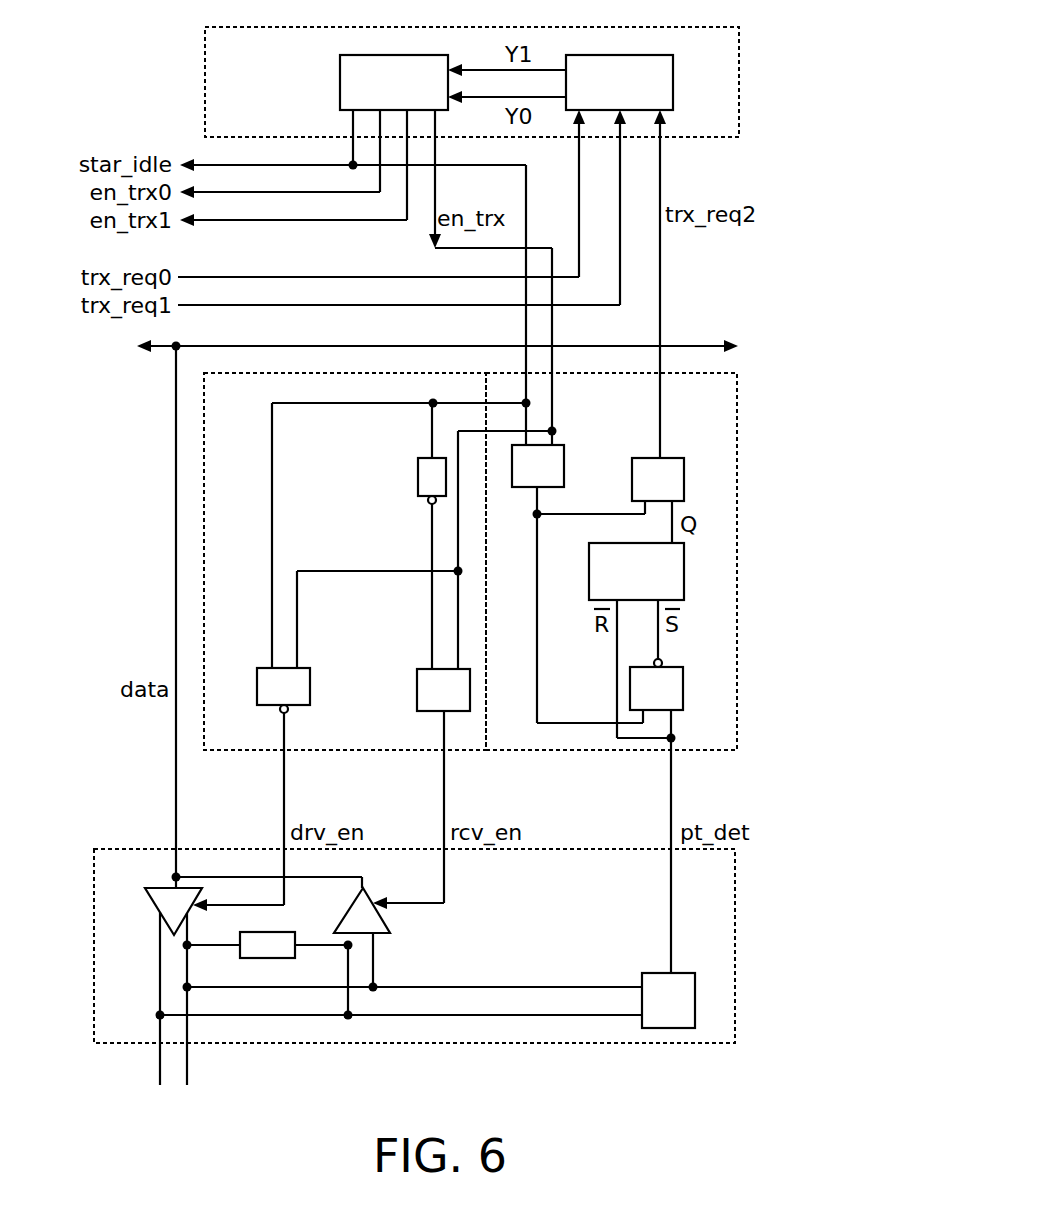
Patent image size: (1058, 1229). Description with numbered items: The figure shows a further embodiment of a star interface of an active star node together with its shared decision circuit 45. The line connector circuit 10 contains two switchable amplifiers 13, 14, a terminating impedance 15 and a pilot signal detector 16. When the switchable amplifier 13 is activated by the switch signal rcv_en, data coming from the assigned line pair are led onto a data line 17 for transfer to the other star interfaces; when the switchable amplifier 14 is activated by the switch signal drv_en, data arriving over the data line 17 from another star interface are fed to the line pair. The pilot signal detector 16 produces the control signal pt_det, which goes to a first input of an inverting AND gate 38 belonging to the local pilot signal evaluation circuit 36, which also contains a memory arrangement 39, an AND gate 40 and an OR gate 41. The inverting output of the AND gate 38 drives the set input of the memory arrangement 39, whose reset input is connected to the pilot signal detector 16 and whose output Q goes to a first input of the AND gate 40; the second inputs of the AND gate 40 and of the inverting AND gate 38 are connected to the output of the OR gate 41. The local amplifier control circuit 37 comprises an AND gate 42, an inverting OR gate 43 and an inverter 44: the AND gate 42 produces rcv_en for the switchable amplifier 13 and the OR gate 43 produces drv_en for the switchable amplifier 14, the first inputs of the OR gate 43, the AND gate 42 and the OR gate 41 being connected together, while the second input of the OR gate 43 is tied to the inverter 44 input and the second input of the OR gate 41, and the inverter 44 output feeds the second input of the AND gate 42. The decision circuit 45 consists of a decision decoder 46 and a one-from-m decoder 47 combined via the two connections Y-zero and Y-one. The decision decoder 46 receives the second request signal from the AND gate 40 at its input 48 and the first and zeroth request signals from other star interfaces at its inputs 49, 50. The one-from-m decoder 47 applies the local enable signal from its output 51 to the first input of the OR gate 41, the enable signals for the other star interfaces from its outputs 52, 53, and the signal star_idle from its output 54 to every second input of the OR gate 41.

The line connector circuit 10 is at (718, 928).
The switchable amplifier 13 is at (367, 915).
The switchable amplifier 14 is at (158, 903).
The terminating impedance 15 is at (282, 938).
The pilot signal detector 16 is at (657, 982).
The data line 17 is at (175, 535).
The pilot signal evaluation circuit 36 is at (723, 580).
The amplifier control circuit 37 is at (255, 738).
The inverting AND gate 38 is at (675, 677).
The memory arrangement 39 is at (613, 570).
The AND gate 40 is at (675, 467).
The OR gate 41 is at (562, 458).
The AND gate 42 is at (422, 687).
The inverting OR gate 43 is at (307, 685).
The inverter 44 is at (423, 483).
The decision circuit 45 is at (725, 75).
The decision decoder 46 is at (668, 90).
The 1-from-m decoder 47 is at (353, 78).
The input 48 is at (662, 112).
The input 49 is at (623, 115).
The input 50 is at (579, 112).
The output 51 is at (435, 112).
The output 52 is at (407, 112).
The output 53 is at (382, 112).
The output 54 is at (340, 111).